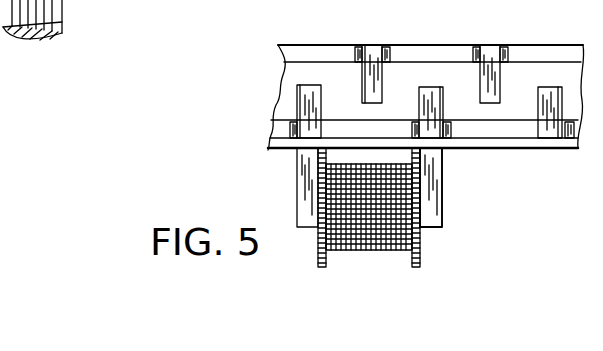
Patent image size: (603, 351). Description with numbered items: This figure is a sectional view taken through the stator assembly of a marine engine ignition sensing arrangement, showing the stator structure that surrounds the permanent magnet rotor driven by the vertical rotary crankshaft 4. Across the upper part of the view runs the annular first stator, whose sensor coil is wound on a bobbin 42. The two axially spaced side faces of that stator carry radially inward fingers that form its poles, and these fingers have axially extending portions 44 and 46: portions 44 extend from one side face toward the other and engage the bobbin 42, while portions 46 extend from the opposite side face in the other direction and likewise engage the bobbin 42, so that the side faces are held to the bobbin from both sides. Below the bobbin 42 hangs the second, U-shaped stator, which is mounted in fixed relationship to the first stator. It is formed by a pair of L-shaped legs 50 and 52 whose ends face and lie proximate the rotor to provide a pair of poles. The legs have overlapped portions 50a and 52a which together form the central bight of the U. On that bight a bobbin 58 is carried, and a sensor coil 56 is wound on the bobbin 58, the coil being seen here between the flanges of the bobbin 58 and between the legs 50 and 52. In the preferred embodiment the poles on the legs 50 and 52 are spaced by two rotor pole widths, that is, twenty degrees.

The vertical rotary crankshaft 4 is at (60, 10).
The bobbin 42 is at (530, 72).
The finger portions 44 is at (372, 101).
The finger portions 46 is at (433, 86).
The leg 50 is at (443, 218).
The overlapped portion 50a is at (375, 203).
The leg 52 is at (305, 162).
The overlapped portion 52a is at (400, 217).
The sensor coil 56 is at (380, 252).
The bobbin 58 is at (421, 248).